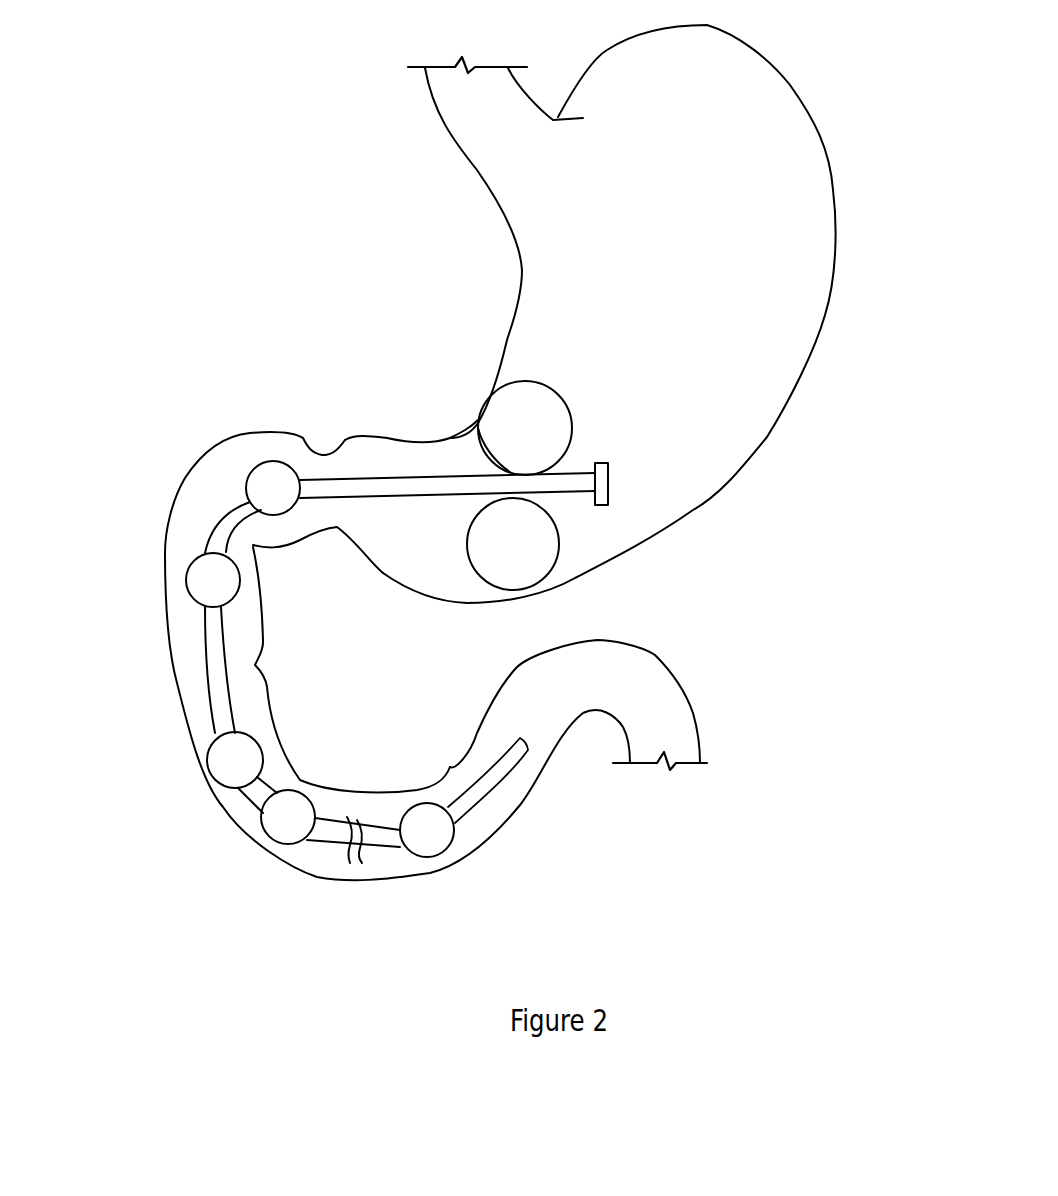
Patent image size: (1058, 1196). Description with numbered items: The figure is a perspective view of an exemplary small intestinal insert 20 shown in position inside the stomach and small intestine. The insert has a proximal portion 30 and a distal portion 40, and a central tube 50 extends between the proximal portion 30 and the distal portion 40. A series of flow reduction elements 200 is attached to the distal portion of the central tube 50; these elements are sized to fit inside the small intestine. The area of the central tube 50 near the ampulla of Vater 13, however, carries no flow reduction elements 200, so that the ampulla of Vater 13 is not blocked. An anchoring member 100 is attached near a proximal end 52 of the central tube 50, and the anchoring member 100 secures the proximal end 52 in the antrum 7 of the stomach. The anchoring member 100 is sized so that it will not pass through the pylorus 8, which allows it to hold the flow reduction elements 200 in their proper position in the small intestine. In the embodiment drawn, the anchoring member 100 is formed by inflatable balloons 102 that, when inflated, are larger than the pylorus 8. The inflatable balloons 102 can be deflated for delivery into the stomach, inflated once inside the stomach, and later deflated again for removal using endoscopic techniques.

The antrum 7 is at (447, 563).
The pylorus 8 is at (327, 512).
The ampulla of Vater 13 is at (260, 663).
The small intestinal insert 20 is at (190, 513).
The proximal portion 30 is at (455, 462).
The distal portion 40 is at (223, 800).
The central tube 50 is at (348, 480).
The proximal end 52 is at (600, 502).
The anchoring member 100 is at (582, 437).
The inflatable balloon 102 is at (543, 383).
The flow reduction element 200 is at (233, 593).